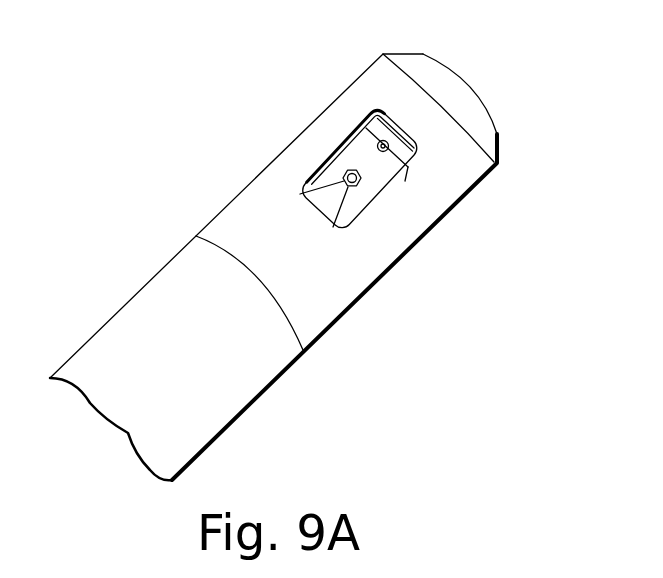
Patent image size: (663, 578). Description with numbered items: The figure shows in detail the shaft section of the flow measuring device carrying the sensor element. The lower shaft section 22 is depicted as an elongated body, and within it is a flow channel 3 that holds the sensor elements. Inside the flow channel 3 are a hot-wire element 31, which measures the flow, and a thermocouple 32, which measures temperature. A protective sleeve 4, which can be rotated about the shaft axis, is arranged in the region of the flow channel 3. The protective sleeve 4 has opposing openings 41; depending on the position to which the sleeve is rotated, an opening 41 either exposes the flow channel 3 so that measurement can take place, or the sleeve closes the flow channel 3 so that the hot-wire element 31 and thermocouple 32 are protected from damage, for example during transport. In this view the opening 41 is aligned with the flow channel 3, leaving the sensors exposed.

The flow channel 3 is at (360, 105).
The protective sleeve 4 is at (362, 283).
The lower shaft section 22 is at (133, 320).
The hot-wire element 31 is at (384, 140).
The thermocouple 32 is at (357, 187).
The opening 41 is at (418, 184).